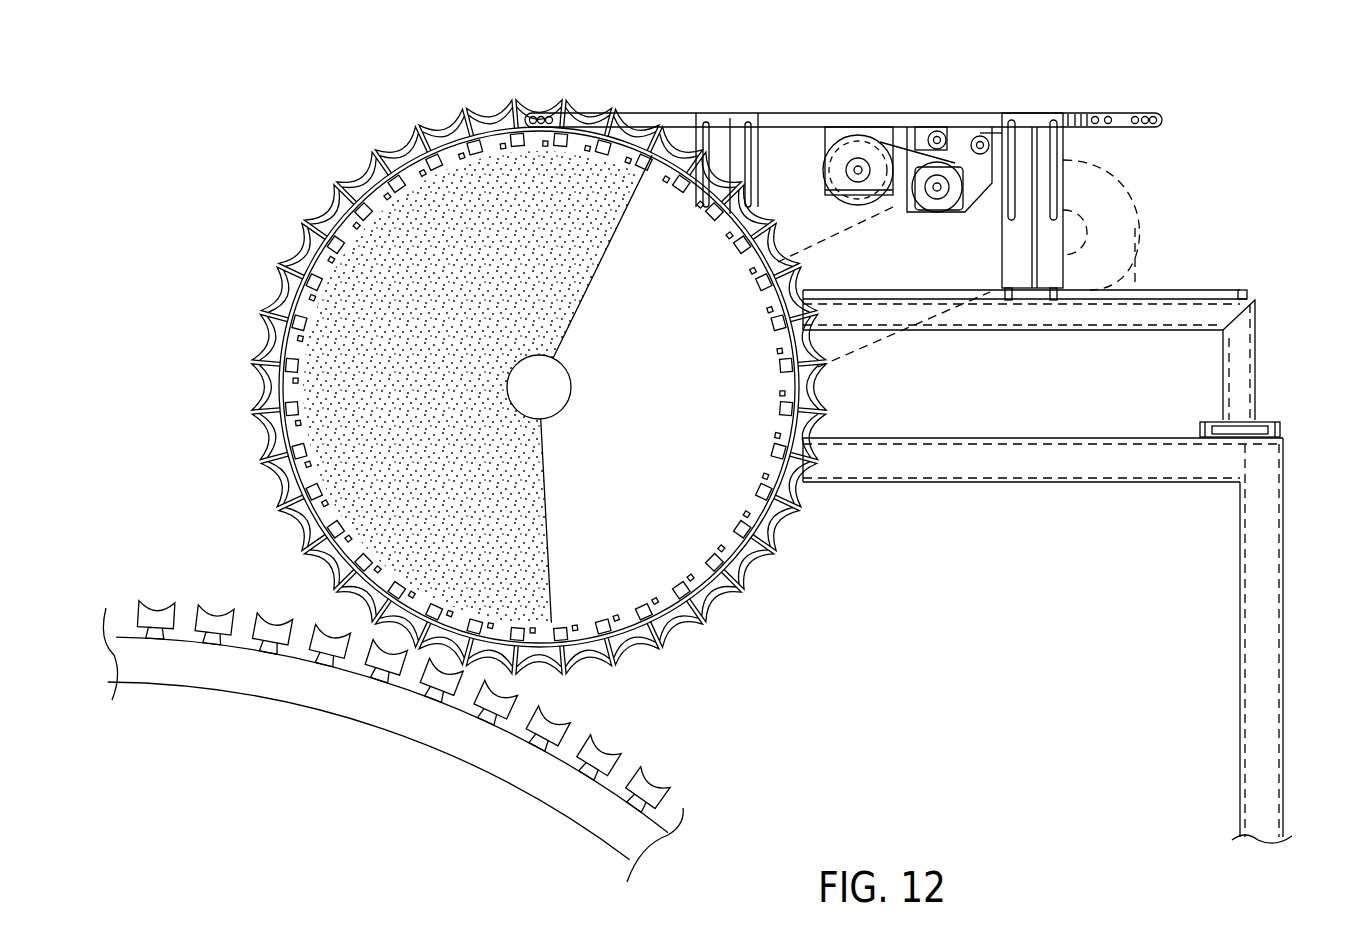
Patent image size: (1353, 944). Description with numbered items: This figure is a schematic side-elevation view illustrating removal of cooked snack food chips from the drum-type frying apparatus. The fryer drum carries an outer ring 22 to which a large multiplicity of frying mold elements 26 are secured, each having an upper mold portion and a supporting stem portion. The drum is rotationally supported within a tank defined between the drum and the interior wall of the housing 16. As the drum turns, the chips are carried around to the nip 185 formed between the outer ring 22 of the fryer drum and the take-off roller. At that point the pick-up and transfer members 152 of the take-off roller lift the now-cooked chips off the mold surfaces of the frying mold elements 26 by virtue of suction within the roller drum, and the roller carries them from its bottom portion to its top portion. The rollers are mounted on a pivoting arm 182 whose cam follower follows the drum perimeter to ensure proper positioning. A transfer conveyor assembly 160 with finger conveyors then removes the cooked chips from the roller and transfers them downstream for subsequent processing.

The pick-up and transfer members 152 is at (487, 133).
The transfer conveyor assembly 160 is at (783, 100).
The arm 182 is at (923, 283).
The housing 16 is at (1260, 560).
The nip 185 is at (407, 711).
The frying mold element 26 is at (642, 789).
The outer ring 22 is at (642, 858).